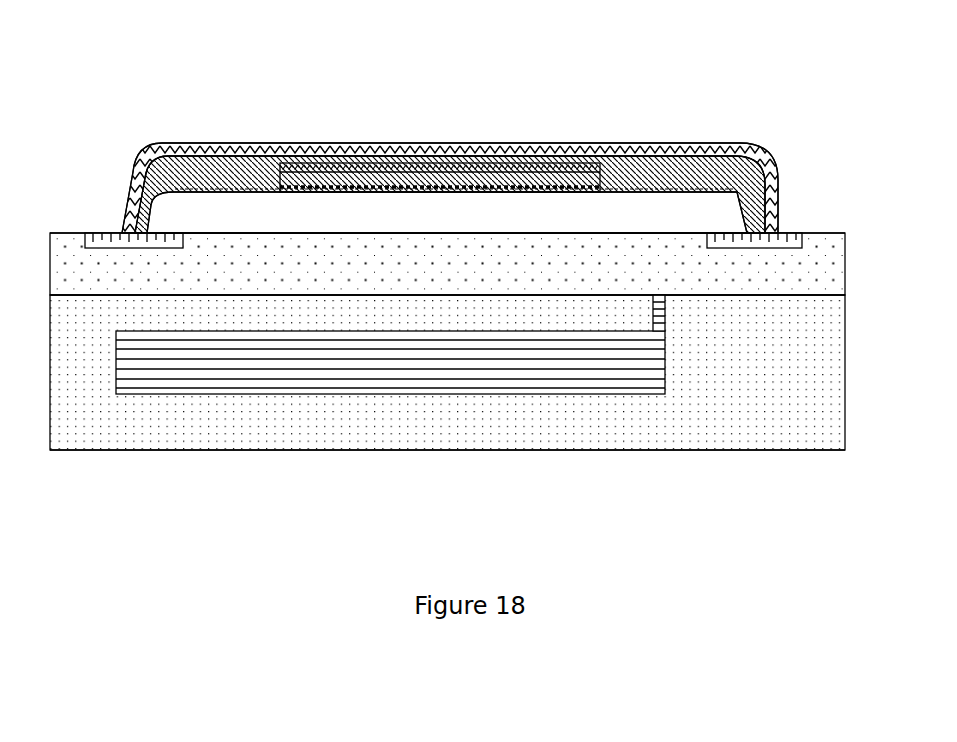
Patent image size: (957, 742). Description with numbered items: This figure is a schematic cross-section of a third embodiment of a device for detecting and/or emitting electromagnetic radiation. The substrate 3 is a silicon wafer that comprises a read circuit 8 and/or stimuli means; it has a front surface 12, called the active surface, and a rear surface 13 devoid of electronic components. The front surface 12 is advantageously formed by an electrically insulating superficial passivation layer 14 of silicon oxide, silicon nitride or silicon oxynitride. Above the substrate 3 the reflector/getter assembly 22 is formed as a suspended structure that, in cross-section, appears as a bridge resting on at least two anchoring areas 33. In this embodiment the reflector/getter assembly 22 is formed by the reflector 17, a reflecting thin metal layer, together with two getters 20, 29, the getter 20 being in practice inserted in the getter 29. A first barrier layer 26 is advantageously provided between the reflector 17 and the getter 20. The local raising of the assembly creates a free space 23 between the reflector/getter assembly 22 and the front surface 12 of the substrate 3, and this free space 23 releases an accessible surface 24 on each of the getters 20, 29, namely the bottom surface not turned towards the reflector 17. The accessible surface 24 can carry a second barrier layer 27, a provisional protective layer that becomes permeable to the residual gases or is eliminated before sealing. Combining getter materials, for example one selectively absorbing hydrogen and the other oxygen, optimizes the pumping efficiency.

The substrate 3 is at (820, 323).
The read circuit 8 is at (617, 370).
The front surface 12 is at (806, 233).
The rear surface 13 is at (763, 452).
The superficial passivation layer 14 is at (828, 262).
The reflector 17 is at (250, 143).
The getter 20 is at (412, 190).
The reflector/getter assembly 22 is at (282, 172).
The free space 23 is at (245, 210).
The accessible surface 24 is at (512, 193).
The first barrier layer 26 is at (572, 178).
The second barrier layer 27 is at (430, 190).
The getter 29 is at (673, 180).
The anchoring areas 33 is at (140, 245).